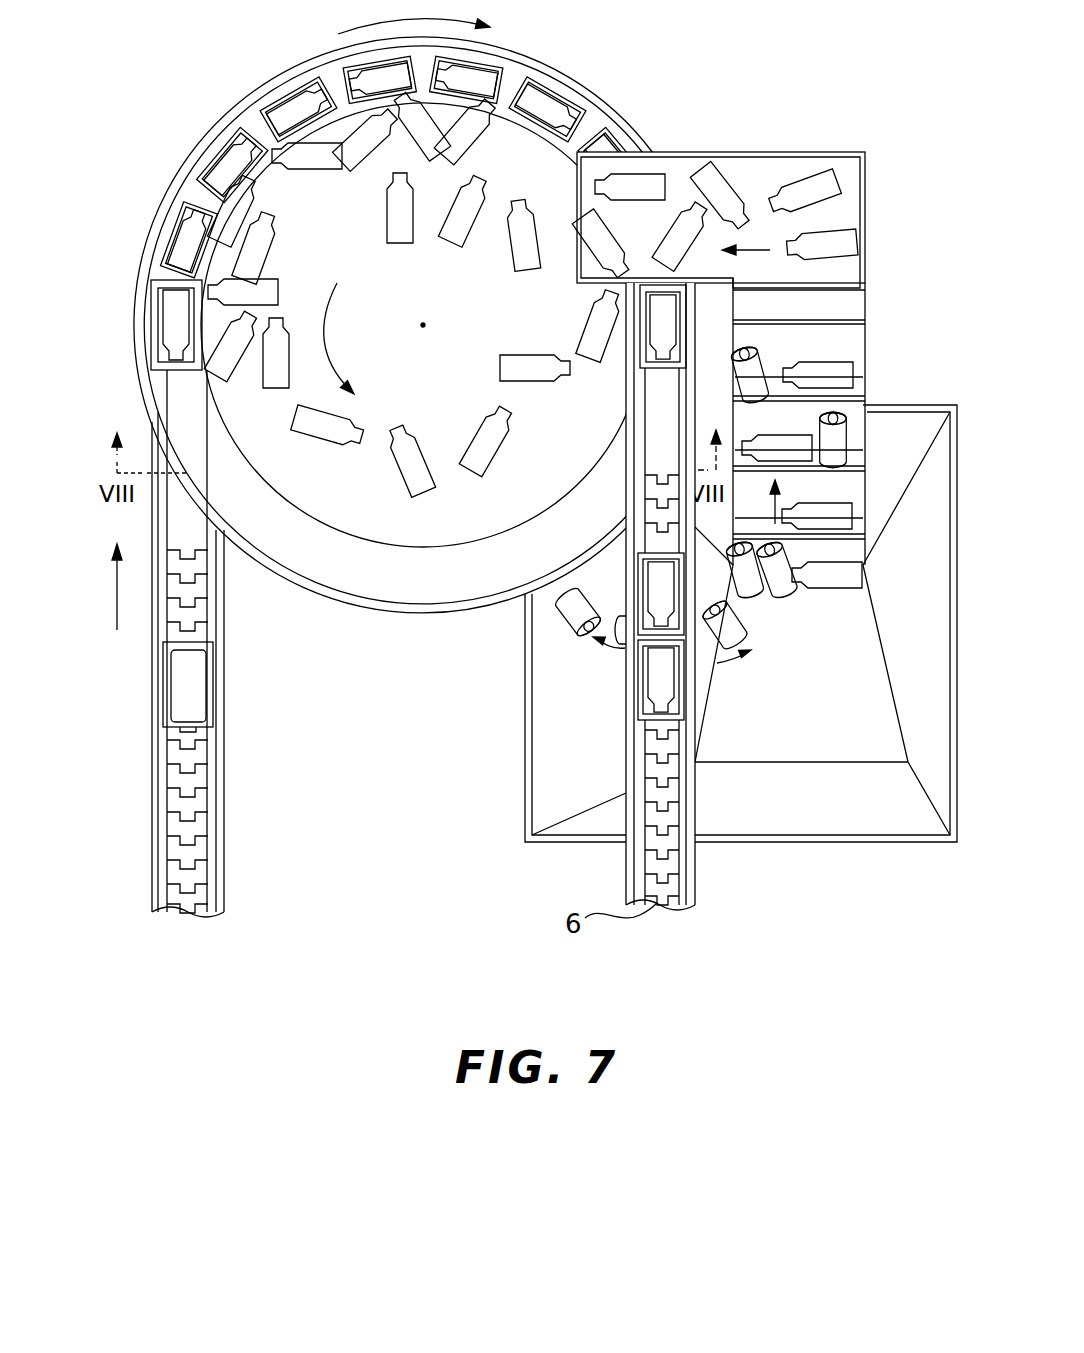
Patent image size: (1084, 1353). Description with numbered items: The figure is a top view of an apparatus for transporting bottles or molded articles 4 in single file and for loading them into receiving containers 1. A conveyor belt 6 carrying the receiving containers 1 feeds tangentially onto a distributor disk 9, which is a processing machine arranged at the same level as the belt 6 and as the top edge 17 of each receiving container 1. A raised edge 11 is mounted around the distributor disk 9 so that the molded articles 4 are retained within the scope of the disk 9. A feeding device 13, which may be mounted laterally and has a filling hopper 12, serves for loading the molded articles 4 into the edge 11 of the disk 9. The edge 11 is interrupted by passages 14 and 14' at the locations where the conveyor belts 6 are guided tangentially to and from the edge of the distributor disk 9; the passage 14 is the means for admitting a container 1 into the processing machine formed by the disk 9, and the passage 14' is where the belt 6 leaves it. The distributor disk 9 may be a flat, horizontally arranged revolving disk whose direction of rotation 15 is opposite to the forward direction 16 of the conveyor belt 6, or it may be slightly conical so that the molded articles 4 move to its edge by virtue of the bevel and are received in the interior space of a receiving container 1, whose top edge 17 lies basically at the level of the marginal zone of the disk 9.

The receiving container 1 is at (553, 107).
The molded articles 4 is at (287, 110).
The conveyor belt 6 is at (188, 825).
The distributor disk 9 is at (417, 524).
The raised edge 11 is at (452, 609).
The filling hopper 12 is at (812, 812).
The feeding device 13 is at (803, 143).
The passage 14 is at (153, 640).
The passage 14' is at (829, 441).
The direction of rotation 15 is at (376, 336).
The forward direction 16 is at (117, 605).
The top edge 17 is at (212, 710).